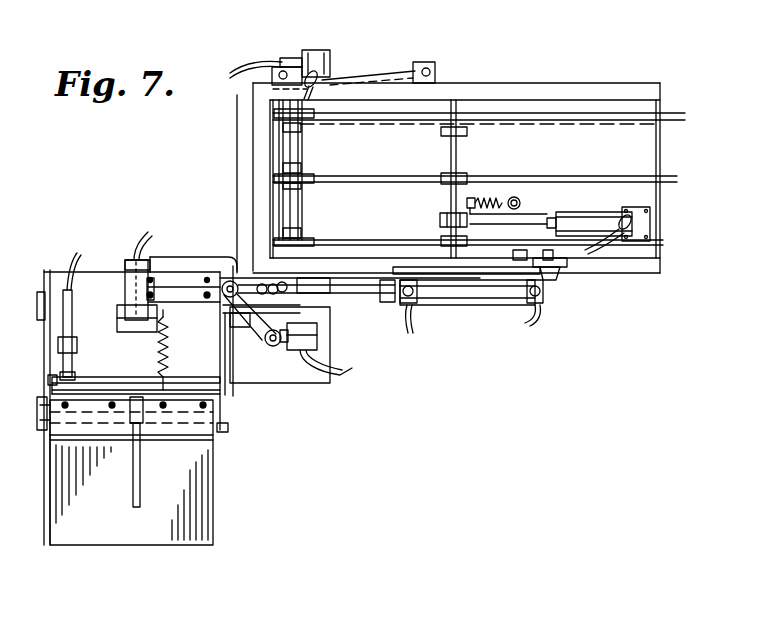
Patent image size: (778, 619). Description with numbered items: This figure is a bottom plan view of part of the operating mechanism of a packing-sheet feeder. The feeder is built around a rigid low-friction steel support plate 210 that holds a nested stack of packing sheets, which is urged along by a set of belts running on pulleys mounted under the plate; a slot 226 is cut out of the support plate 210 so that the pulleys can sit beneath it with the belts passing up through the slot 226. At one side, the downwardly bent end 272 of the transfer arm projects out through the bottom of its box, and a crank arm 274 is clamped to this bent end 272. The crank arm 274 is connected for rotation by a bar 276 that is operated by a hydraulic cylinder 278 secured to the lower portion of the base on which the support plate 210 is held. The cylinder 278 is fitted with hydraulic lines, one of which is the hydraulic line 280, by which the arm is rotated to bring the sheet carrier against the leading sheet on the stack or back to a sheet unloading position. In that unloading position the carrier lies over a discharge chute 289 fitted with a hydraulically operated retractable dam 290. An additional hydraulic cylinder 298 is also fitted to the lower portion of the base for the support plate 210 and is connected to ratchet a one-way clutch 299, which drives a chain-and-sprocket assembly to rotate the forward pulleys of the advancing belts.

The support plate 210 is at (438, 163).
The slot 226 is at (302, 152).
The downwardly bent end 272 is at (317, 337).
The crank arm 274 is at (250, 322).
The bar 276 is at (350, 330).
The hydraulic cylinder 278 is at (510, 300).
The hydraulic line 280 is at (430, 307).
The discharge chute 289 is at (53, 298).
The retractable dam 290 is at (103, 387).
The hydraulic cylinder 298 is at (595, 190).
The one-way clutch 299 is at (441, 222).